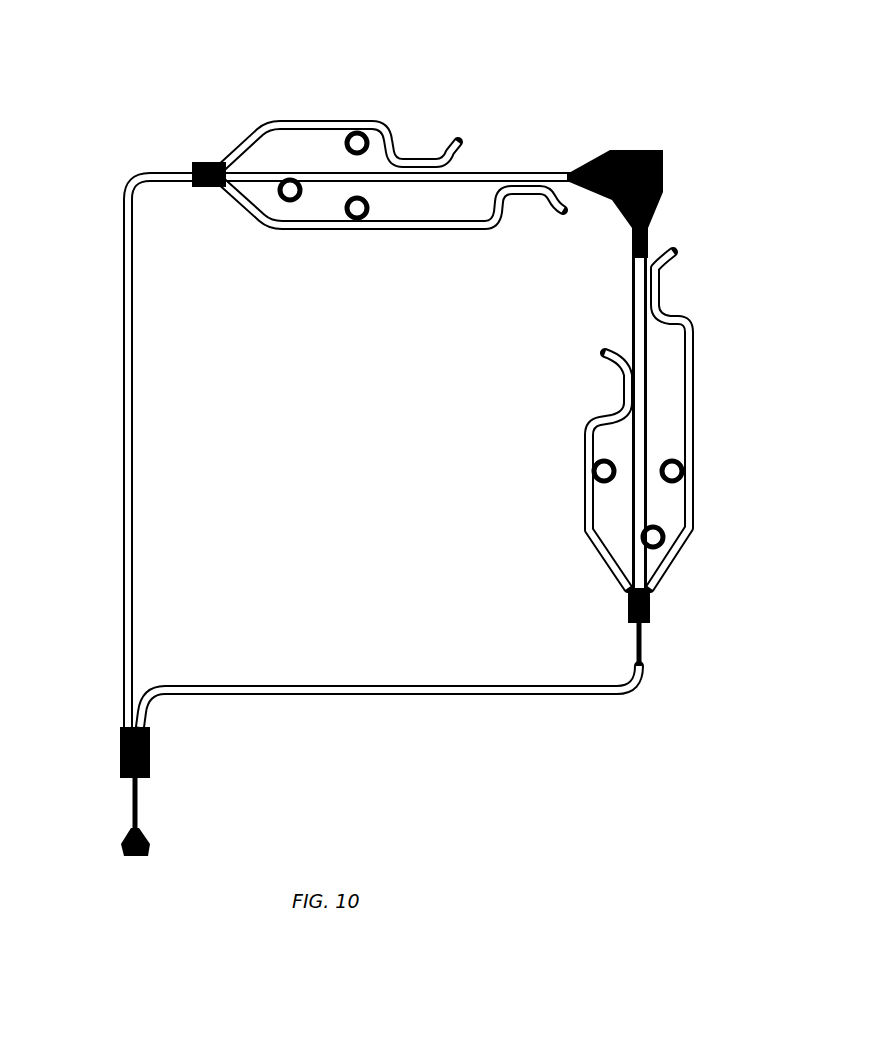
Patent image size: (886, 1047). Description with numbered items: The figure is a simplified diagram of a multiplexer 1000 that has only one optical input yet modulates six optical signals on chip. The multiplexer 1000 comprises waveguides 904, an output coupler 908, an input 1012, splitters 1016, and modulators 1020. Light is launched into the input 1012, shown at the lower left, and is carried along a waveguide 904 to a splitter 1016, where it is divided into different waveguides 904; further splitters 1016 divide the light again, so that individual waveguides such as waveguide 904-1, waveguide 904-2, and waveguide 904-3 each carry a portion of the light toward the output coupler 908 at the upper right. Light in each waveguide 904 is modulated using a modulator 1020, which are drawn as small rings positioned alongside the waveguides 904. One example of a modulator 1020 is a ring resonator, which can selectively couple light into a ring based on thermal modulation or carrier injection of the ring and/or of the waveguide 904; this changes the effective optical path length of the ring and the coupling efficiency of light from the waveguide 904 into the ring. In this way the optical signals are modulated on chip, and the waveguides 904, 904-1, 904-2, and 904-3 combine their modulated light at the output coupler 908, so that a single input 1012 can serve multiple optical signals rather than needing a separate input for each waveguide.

The multiplexer 1000 is at (160, 62).
The waveguide 904 is at (692, 368).
The waveguide 904-1 is at (240, 176).
The waveguide 904-2 is at (288, 122).
The waveguide 904-3 is at (462, 230).
The output coupler 908 is at (652, 182).
The input 1012 is at (122, 845).
The splitter 1016 is at (195, 168).
The modulator 1020 is at (368, 135).